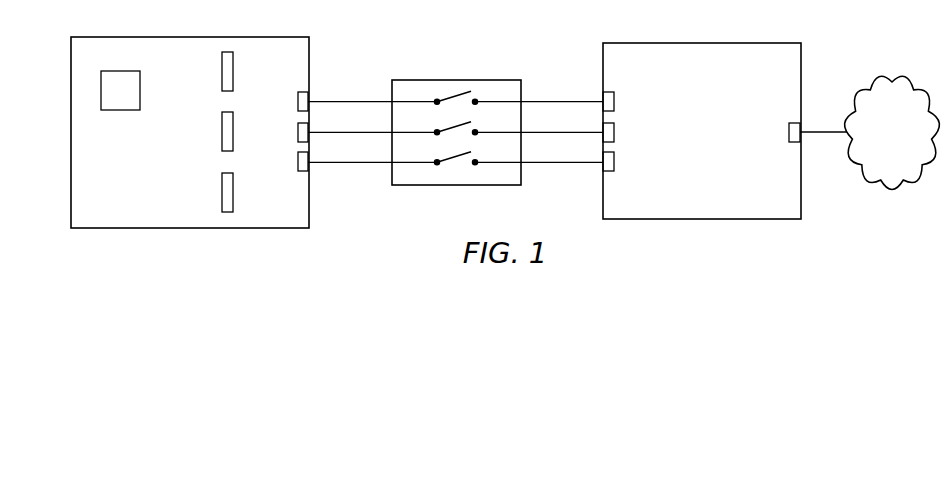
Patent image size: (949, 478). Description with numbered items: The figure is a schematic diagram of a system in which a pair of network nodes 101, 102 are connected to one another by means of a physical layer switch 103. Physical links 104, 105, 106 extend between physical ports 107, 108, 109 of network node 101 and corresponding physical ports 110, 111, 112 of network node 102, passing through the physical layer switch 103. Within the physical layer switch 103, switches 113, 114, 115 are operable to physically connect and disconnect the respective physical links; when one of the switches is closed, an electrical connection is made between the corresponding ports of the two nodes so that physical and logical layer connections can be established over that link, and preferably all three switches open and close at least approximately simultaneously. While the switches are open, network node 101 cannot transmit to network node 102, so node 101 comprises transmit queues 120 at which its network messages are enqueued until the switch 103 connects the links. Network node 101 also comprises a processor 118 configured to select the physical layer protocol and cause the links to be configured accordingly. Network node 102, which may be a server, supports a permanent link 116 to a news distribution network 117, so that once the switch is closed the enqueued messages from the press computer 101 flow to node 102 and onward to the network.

The network node 101 is at (92, 37).
The network node 102 is at (782, 43).
The physical layer switch 103 is at (503, 80).
The physical link 104 is at (331, 101).
The physical link 105 is at (370, 132).
The physical link 106 is at (350, 163).
The physical port 107 is at (298, 101).
The physical port 108 is at (298, 132).
The physical port 109 is at (298, 162).
The physical port 110 is at (614, 101).
The physical port 111 is at (614, 132).
The physical port 112 is at (614, 162).
The switch 113 is at (437, 99).
The switch 114 is at (437, 134).
The switch 115 is at (475, 166).
The permanent link 116 is at (828, 130).
The news distribution network 117 is at (907, 77).
The processor 118 is at (121, 110).
The transmit queues 120 is at (222, 70).